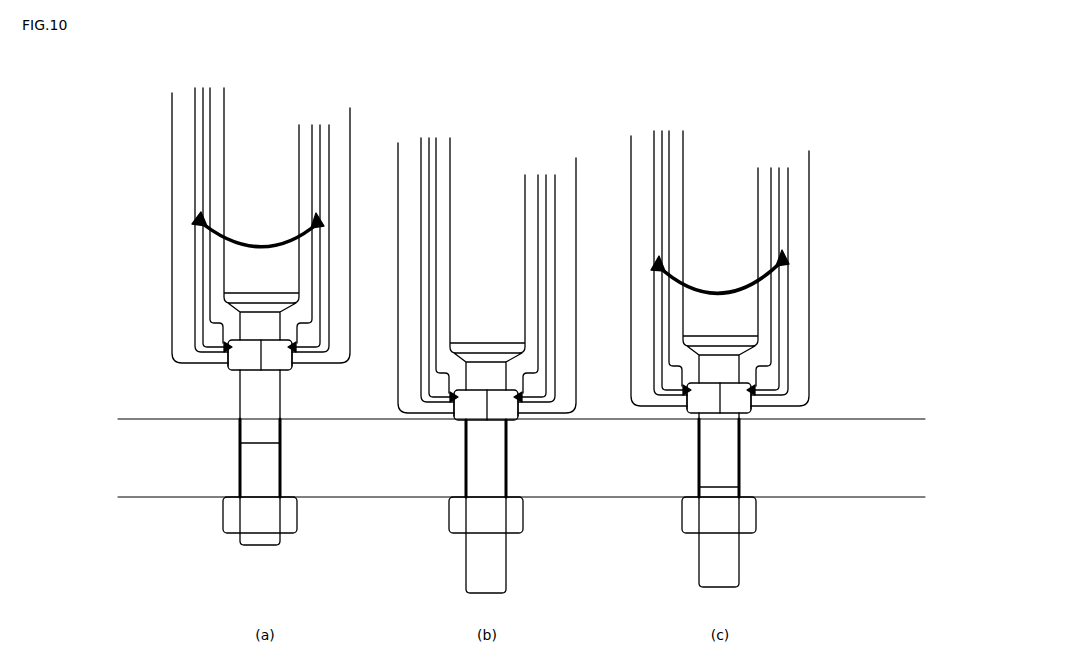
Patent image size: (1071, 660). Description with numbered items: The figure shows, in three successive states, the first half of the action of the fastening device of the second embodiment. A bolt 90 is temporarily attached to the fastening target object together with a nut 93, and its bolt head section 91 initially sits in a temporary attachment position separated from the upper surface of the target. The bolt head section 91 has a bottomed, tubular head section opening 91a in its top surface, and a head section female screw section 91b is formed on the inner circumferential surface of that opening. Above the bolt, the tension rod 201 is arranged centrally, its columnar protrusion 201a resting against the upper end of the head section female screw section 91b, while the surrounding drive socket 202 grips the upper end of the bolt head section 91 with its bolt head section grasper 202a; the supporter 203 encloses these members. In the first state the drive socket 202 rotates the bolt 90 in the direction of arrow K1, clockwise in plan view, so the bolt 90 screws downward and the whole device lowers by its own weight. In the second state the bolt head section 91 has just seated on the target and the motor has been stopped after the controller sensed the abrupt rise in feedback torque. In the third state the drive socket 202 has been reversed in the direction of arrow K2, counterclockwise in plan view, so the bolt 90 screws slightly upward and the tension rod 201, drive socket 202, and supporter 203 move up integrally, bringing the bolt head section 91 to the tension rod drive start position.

The tension rod 201 is at (245, 108).
The columnar protrusion 201a is at (295, 358).
The drive socket 202 is at (205, 105).
The bolt head section grasper 202a is at (220, 342).
The supporter 203 is at (338, 127).
The bolt 90 is at (280, 423).
The bolt head section 91 is at (226, 368).
The head section opening 91a is at (217, 345).
The head section female screw section 91b is at (521, 380).
The nut 93 is at (287, 513).
The arrow K1 is at (258, 229).
The arrow K2 is at (720, 271).